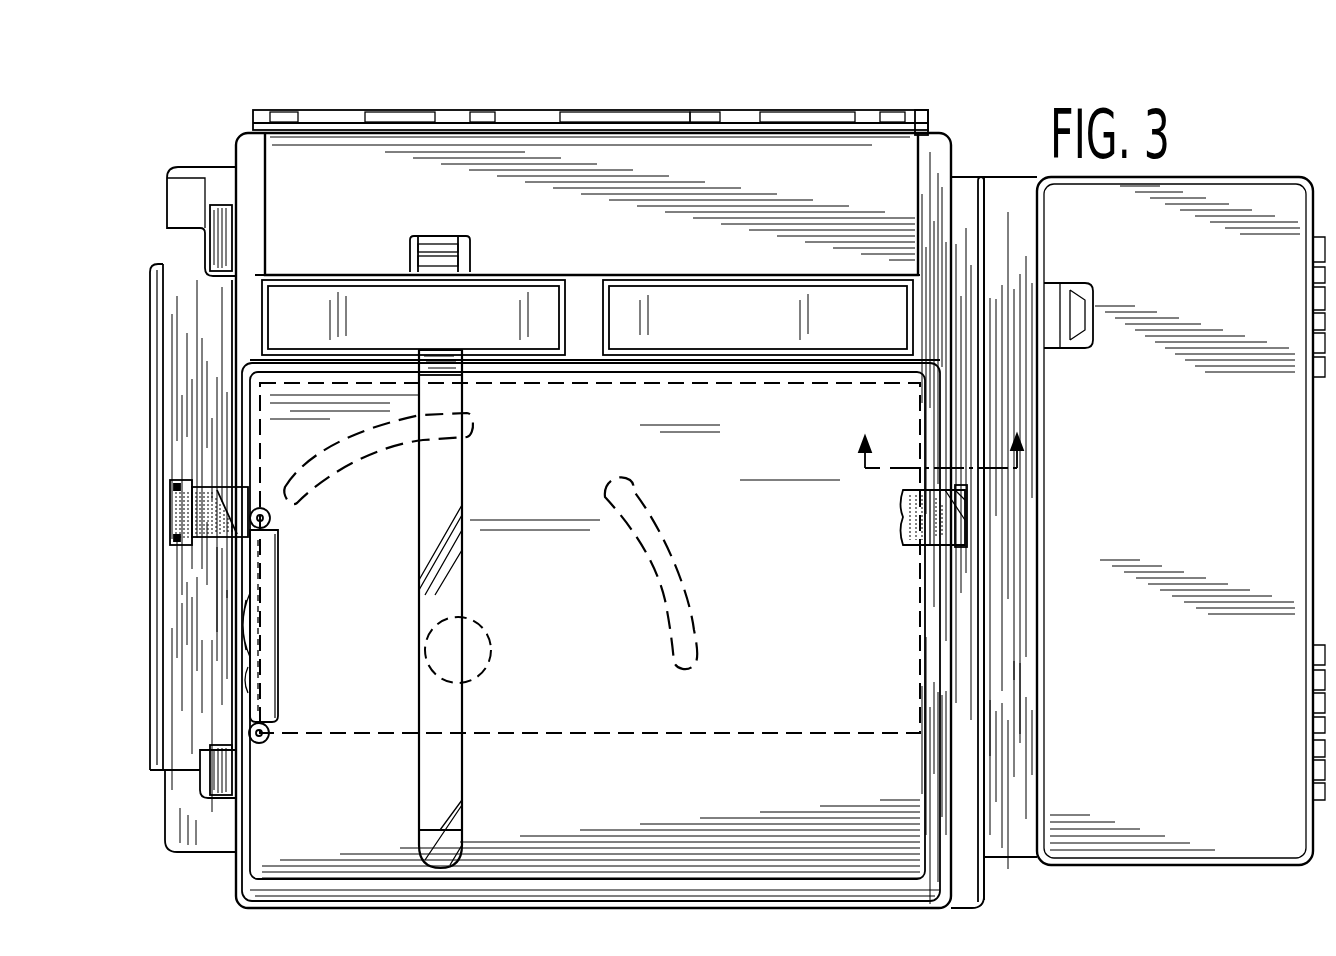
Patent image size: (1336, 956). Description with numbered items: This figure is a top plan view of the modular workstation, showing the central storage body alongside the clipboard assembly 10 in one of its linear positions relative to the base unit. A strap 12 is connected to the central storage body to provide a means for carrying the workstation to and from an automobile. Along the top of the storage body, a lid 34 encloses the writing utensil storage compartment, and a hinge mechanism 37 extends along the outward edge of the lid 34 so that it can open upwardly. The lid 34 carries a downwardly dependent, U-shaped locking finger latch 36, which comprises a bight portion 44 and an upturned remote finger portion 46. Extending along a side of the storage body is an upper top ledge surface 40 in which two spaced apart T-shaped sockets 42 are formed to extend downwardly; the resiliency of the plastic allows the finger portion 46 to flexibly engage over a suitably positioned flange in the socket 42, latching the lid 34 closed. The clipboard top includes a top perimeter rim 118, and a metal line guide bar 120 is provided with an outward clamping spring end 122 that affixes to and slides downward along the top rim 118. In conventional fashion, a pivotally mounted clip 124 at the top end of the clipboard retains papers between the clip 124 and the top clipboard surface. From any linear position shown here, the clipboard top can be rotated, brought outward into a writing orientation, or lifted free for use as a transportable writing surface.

The clipboard assembly 10 is at (942, 437).
The strap 12 is at (213, 503).
The lid 34 is at (766, 190).
The U-shaped locking finger latch 36 is at (470, 240).
The hinge mechanism 37 is at (870, 114).
The upper top ledge surface 40 is at (185, 315).
The T-shaped sockets 42 is at (212, 245).
The bight portion 44 is at (420, 246).
The upturned remote finger portion 46 is at (420, 262).
The top perimeter rim 118 is at (540, 383).
The line guide bar 120 is at (437, 797).
The outward clamping spring end 122 is at (452, 368).
The pivotally mounted clip 124 is at (268, 596).